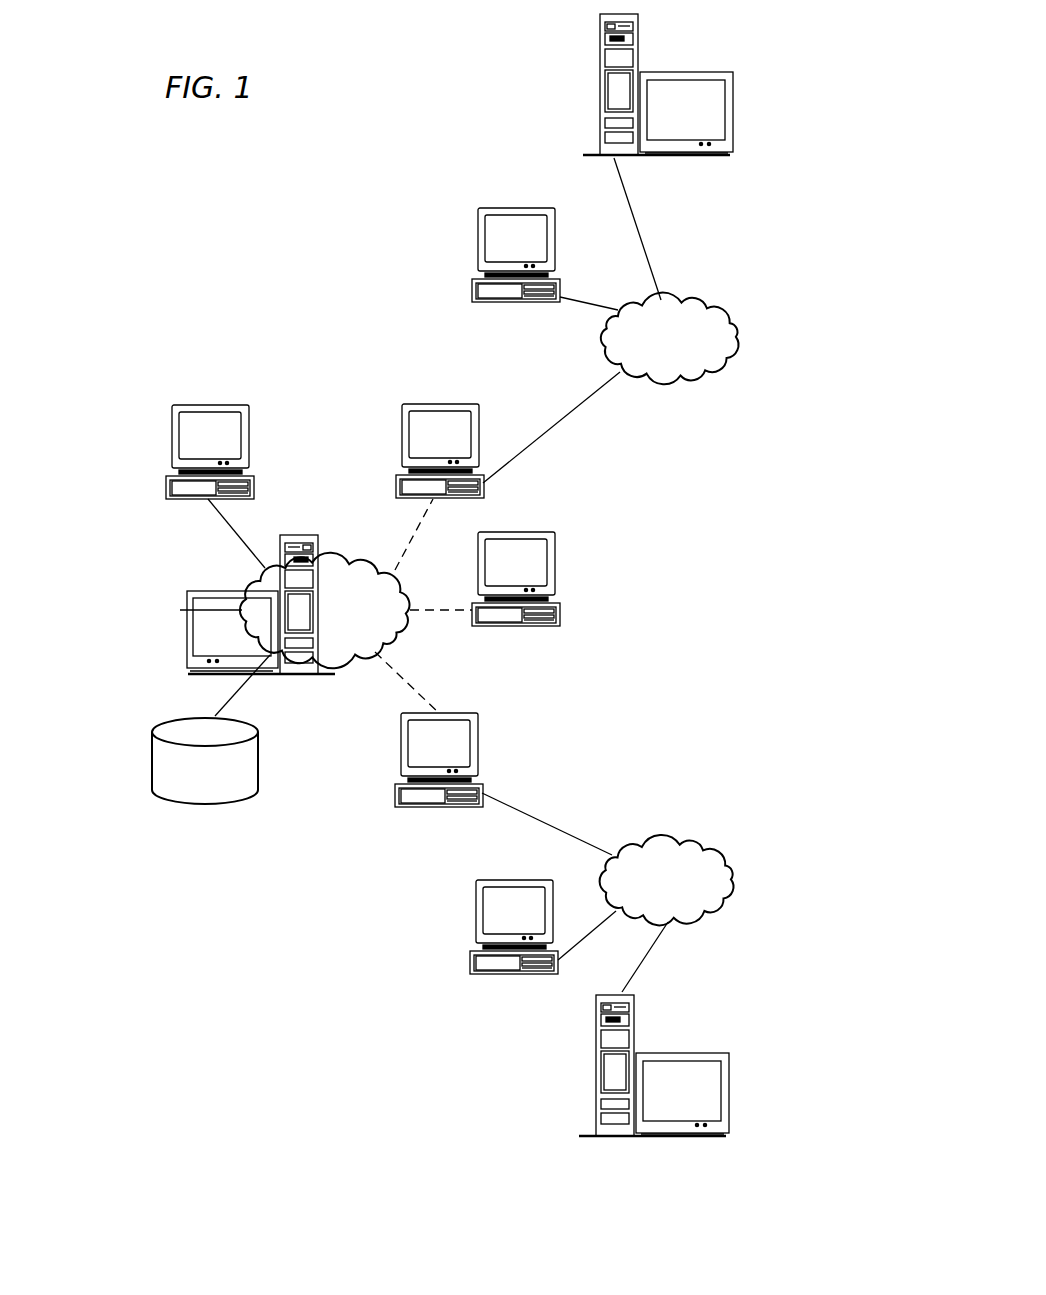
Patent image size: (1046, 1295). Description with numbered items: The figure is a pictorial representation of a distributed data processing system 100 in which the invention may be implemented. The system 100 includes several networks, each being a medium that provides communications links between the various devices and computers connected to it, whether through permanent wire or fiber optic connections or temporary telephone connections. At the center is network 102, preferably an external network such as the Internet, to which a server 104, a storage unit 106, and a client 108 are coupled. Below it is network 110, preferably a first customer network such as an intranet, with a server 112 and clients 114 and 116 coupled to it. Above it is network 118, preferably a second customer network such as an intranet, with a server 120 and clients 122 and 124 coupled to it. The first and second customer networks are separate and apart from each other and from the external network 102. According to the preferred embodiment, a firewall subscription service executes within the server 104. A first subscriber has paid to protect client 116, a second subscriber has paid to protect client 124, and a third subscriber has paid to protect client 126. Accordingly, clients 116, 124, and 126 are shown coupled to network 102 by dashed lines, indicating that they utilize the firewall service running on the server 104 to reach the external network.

The distributed data processing system 100 is at (270, 192).
The network 102 is at (308, 634).
The server 104 is at (92, 590).
The storage unit 106 is at (152, 761).
The client 108 is at (172, 437).
The network 110 is at (726, 908).
The server 112 is at (691, 1051).
The client 114 is at (476, 912).
The client 116 is at (478, 745).
The network 118 is at (728, 316).
The server 120 is at (692, 71).
The client 122 is at (478, 237).
The client 124 is at (480, 421).
The client 126 is at (555, 565).